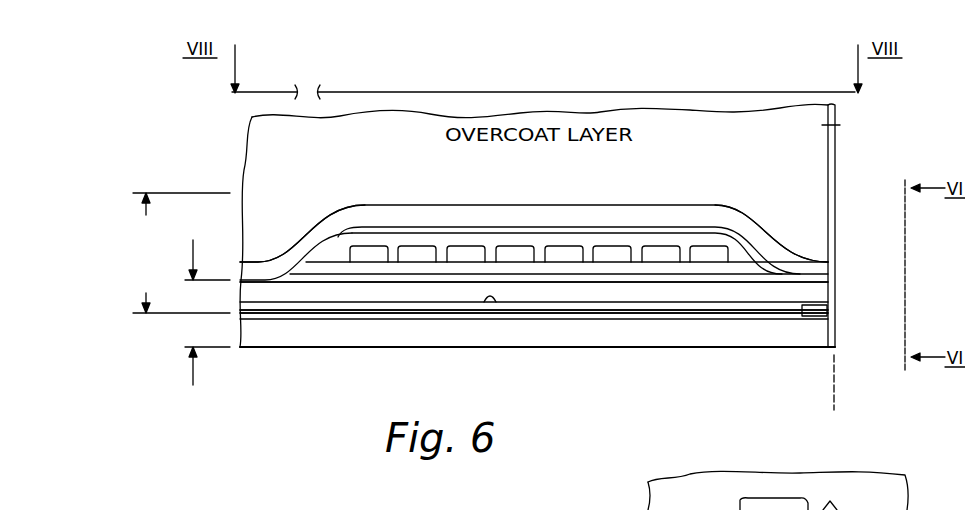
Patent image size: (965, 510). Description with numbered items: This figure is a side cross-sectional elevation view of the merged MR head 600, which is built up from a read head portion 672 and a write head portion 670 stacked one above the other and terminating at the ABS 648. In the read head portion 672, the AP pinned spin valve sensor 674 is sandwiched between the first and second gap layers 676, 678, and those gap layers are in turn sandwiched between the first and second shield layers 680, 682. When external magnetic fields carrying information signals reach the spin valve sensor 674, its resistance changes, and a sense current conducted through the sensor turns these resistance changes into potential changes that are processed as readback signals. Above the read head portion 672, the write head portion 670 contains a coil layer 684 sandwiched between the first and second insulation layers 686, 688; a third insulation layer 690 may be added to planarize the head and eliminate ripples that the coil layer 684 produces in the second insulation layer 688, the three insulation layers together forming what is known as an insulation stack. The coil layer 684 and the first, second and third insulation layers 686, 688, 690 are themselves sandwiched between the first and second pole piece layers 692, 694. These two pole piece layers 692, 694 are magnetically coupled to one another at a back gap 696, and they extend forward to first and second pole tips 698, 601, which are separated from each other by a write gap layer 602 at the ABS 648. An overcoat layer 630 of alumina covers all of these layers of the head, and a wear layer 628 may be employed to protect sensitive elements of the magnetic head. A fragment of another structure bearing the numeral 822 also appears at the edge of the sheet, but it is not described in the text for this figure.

The merged MR head 600 is at (205, 111).
The second pole tip 601 is at (837, 270).
The write gap layer 602 is at (836, 278).
The wear layer 628 is at (836, 150).
The overcoat layer 630 is at (840, 125).
The ABS 648 is at (873, 382).
The write head portion 670 is at (176, 253).
The read head portion 672 is at (200, 403).
The AP pinned spin valve sensor 674 is at (824, 311).
The first gap layer 676 is at (537, 320).
The second gap layer 678 is at (490, 300).
The first shield layer 680 is at (590, 346).
The second shield layer 682 is at (534, 340).
The first pole piece layer 692 is at (665, 294).
The coil layer 684 is at (554, 256).
The first insulation layer 686 is at (427, 283).
The second insulation layer 688 is at (742, 258).
The third insulation layer 690 is at (369, 229).
The second pole piece layer 694 is at (658, 205).
The back gap 696 is at (253, 261).
The first pole tip 698 is at (836, 300).
The element of adjacent figure 822 is at (778, 490).